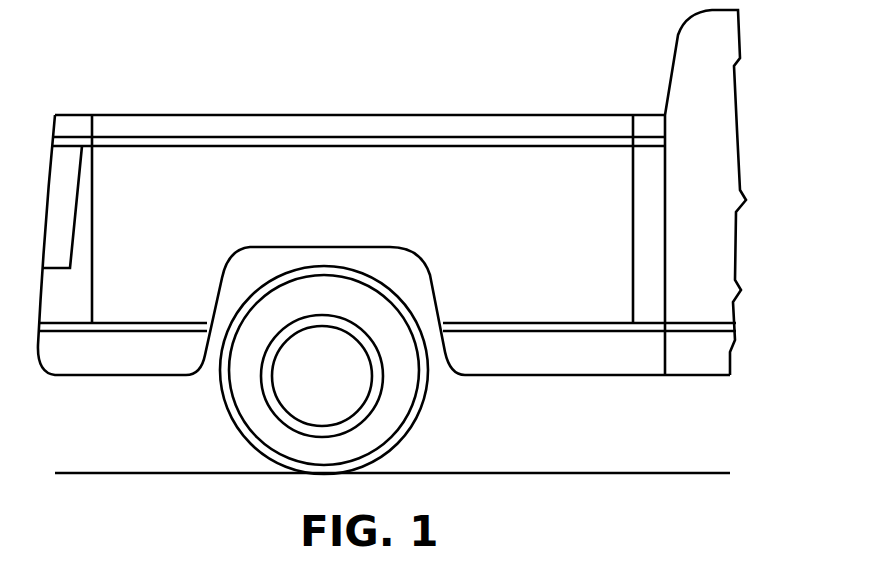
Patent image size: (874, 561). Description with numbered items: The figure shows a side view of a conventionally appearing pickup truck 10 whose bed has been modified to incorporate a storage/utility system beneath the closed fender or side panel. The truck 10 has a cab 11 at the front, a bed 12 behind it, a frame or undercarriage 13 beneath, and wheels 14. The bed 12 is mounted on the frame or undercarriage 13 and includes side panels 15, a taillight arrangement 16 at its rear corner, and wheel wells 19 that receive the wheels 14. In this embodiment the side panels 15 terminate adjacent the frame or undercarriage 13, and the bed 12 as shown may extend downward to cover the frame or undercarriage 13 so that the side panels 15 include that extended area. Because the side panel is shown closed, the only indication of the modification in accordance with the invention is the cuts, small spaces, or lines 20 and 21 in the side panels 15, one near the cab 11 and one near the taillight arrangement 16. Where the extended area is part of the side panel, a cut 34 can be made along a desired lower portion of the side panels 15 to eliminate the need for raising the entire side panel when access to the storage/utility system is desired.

The pickup truck 10 is at (471, 84).
The cab 11 is at (677, 34).
The bed 12 is at (168, 126).
The frame or undercarriage 13 is at (120, 362).
The wheels 14 is at (240, 395).
The side panels 15 is at (349, 203).
The taillight arrangement 16 is at (62, 200).
The wheel wells 19 is at (258, 248).
The cut, small space, or line 20 is at (633, 223).
The cut, small space, or line 21 is at (92, 228).
The cut 34 is at (160, 321).